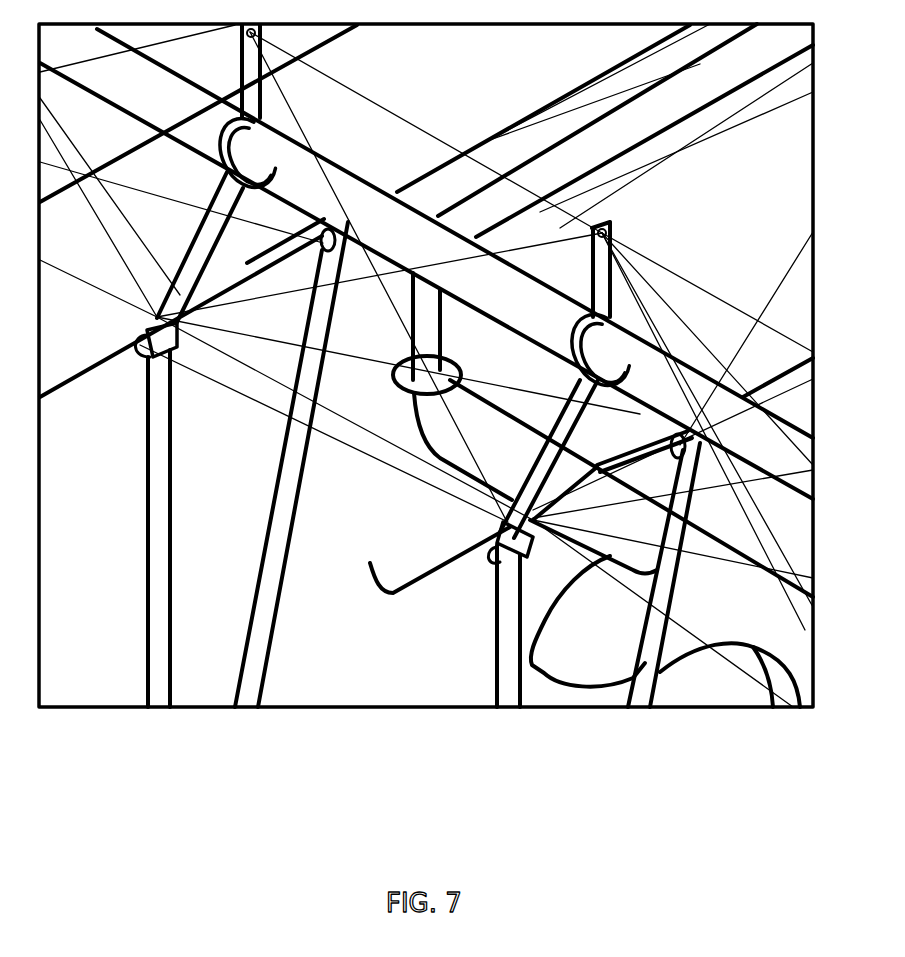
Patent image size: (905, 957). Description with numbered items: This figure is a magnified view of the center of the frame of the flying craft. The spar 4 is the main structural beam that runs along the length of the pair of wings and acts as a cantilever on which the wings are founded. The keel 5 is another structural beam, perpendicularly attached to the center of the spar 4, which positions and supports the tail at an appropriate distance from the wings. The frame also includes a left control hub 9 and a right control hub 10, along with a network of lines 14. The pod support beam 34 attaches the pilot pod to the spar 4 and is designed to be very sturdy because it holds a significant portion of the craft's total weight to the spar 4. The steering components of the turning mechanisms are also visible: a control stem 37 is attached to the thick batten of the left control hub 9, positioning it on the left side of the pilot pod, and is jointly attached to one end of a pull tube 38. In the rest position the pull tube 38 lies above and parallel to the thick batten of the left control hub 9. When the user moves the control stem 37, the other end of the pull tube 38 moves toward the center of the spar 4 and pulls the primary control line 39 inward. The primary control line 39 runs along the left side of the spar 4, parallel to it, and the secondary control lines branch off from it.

The spar 4 is at (303, 178).
The keel 5 is at (650, 107).
The left control hub 9 is at (610, 528).
The right control hub 10 is at (257, 318).
The network of lines 14 is at (345, 80).
The pod support beam 34 is at (430, 413).
The control stem 37 is at (162, 633).
The pull tube 38 is at (293, 232).
The primary control line 39 is at (105, 200).